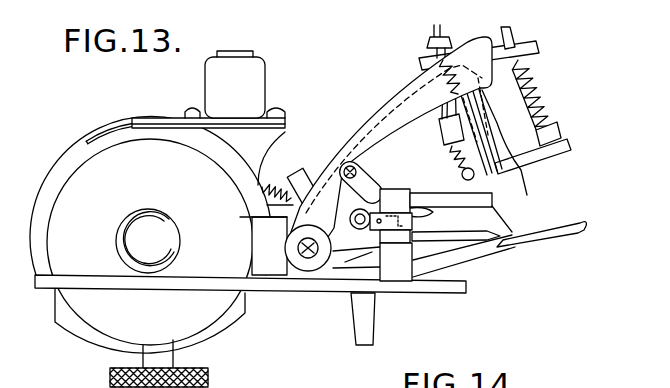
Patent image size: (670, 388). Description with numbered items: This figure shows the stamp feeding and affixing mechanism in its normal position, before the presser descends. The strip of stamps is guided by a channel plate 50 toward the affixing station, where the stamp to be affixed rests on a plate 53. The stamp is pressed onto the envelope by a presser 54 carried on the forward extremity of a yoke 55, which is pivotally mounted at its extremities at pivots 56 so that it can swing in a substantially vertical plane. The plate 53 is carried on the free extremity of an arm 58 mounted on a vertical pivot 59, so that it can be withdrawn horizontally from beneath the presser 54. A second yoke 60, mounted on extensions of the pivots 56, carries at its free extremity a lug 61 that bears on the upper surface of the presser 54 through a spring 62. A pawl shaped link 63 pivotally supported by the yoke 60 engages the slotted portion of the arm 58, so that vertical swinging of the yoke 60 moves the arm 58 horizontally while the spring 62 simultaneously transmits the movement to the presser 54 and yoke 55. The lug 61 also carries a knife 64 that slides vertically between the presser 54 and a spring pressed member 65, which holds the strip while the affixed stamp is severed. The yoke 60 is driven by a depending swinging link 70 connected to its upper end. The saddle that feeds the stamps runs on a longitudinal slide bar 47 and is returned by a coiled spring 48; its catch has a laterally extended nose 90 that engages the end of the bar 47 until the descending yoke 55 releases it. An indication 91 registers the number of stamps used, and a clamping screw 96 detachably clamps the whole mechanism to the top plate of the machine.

The longitudinal slide bar 47 is at (512, 232).
The coiled spring 48 is at (273, 186).
The channel plate 50 is at (463, 242).
The plate 53 is at (560, 221).
The presser 54 is at (543, 158).
The yoke 55 is at (365, 142).
The pivots 56 is at (308, 260).
The arm 58 is at (502, 250).
The vertical pivot 59 is at (392, 255).
The yoke 60 is at (382, 108).
The lug 61 is at (535, 48).
The spring 62 is at (543, 112).
The pawl shaped link 63 is at (368, 183).
The knife 64 is at (506, 154).
The spring pressed member 65 is at (463, 174).
The depending swinging link 70 is at (360, 322).
The nose 90 is at (432, 215).
The indication 91 is at (207, 77).
The clamping screw 96 is at (110, 375).